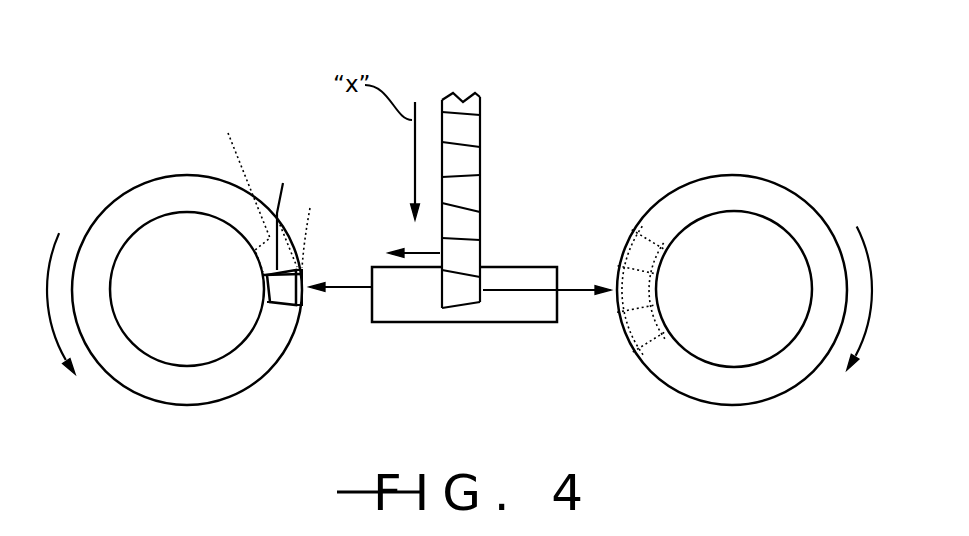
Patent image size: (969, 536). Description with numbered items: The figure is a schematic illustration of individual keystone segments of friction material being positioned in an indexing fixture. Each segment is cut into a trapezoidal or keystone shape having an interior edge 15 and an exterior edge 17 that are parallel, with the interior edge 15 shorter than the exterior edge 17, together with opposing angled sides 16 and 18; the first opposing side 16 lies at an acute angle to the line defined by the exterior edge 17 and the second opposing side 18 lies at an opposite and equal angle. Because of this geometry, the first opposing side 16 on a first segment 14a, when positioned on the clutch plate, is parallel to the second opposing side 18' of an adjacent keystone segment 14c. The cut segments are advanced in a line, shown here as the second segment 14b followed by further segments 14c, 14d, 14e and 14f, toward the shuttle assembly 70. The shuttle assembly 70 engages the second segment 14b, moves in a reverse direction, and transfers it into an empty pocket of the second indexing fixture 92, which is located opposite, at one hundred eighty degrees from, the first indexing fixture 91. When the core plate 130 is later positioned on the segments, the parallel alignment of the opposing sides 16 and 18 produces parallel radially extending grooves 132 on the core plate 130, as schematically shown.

The first indexing fixture 91 is at (177, 190).
The second indexing fixture 92 is at (745, 172).
The core plate 130 is at (675, 397).
The parallel radially extending grooves 132 is at (658, 307).
The interior edge 15 is at (267, 288).
The first opposing side 16 is at (275, 305).
The exterior edge 17 is at (300, 297).
The second opposing side 18 is at (284, 218).
The second opposing side of adjacent segment 18' is at (320, 226).
The first segment 14a is at (430, 285).
The second segment 14b is at (480, 255).
The adjacent keystone segment 14c is at (438, 222).
The cut segment 14d is at (480, 195).
The cut segment 14e is at (442, 160).
The cut segment 14f is at (480, 128).
The shuttle assembly 70 is at (467, 323).